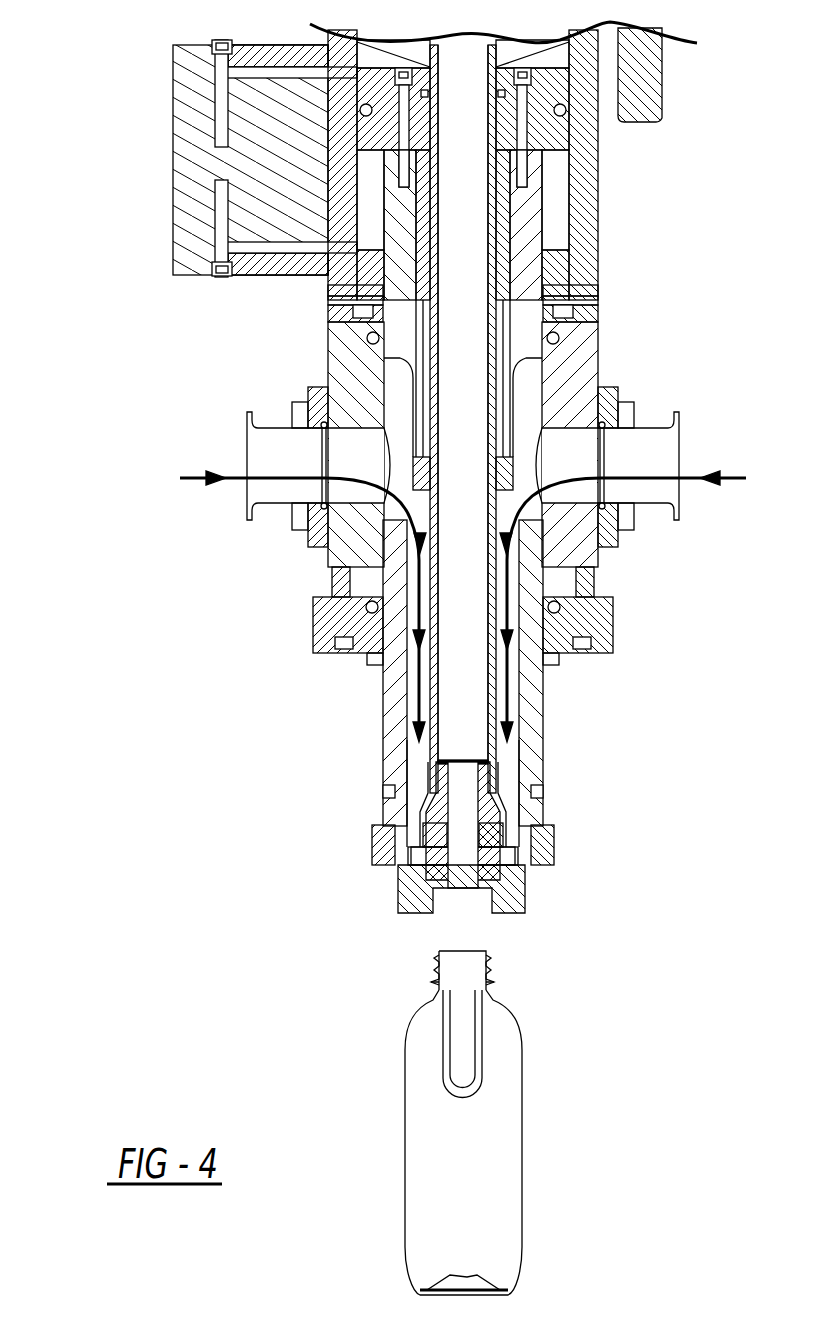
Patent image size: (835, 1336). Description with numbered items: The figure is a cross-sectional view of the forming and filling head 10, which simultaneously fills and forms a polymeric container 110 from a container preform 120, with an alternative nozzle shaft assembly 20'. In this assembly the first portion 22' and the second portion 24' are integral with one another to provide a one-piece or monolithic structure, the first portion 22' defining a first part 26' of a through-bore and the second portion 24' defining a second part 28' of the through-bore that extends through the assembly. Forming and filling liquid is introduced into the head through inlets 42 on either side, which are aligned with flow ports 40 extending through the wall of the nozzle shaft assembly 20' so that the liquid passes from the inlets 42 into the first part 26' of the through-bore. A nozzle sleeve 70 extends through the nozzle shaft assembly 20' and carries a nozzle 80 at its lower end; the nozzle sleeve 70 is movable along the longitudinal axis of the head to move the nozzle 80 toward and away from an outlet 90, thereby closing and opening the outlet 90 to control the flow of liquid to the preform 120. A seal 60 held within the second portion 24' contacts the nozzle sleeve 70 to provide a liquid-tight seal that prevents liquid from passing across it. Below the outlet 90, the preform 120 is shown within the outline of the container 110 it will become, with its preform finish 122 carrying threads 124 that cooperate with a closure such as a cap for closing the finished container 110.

The forming and filling head 10 is at (88, 182).
The nozzle shaft assembly 20' is at (518, 428).
The first portion 22' is at (535, 776).
The second portion 24' is at (591, 419).
The first part of the through-bore 26' is at (401, 793).
The second part of the through-bore 28' is at (403, 475).
The flow ports 40 is at (403, 513).
The inlets 42 is at (247, 452).
The seal 60 is at (500, 483).
The nozzle sleeve 70 is at (460, 694).
The nozzle 80 is at (492, 817).
The outlet 90 is at (448, 886).
The polymeric container 110 is at (522, 1253).
The container preform 120 is at (482, 1078).
The preform finish 122 is at (486, 952).
The threads 124 is at (439, 952).